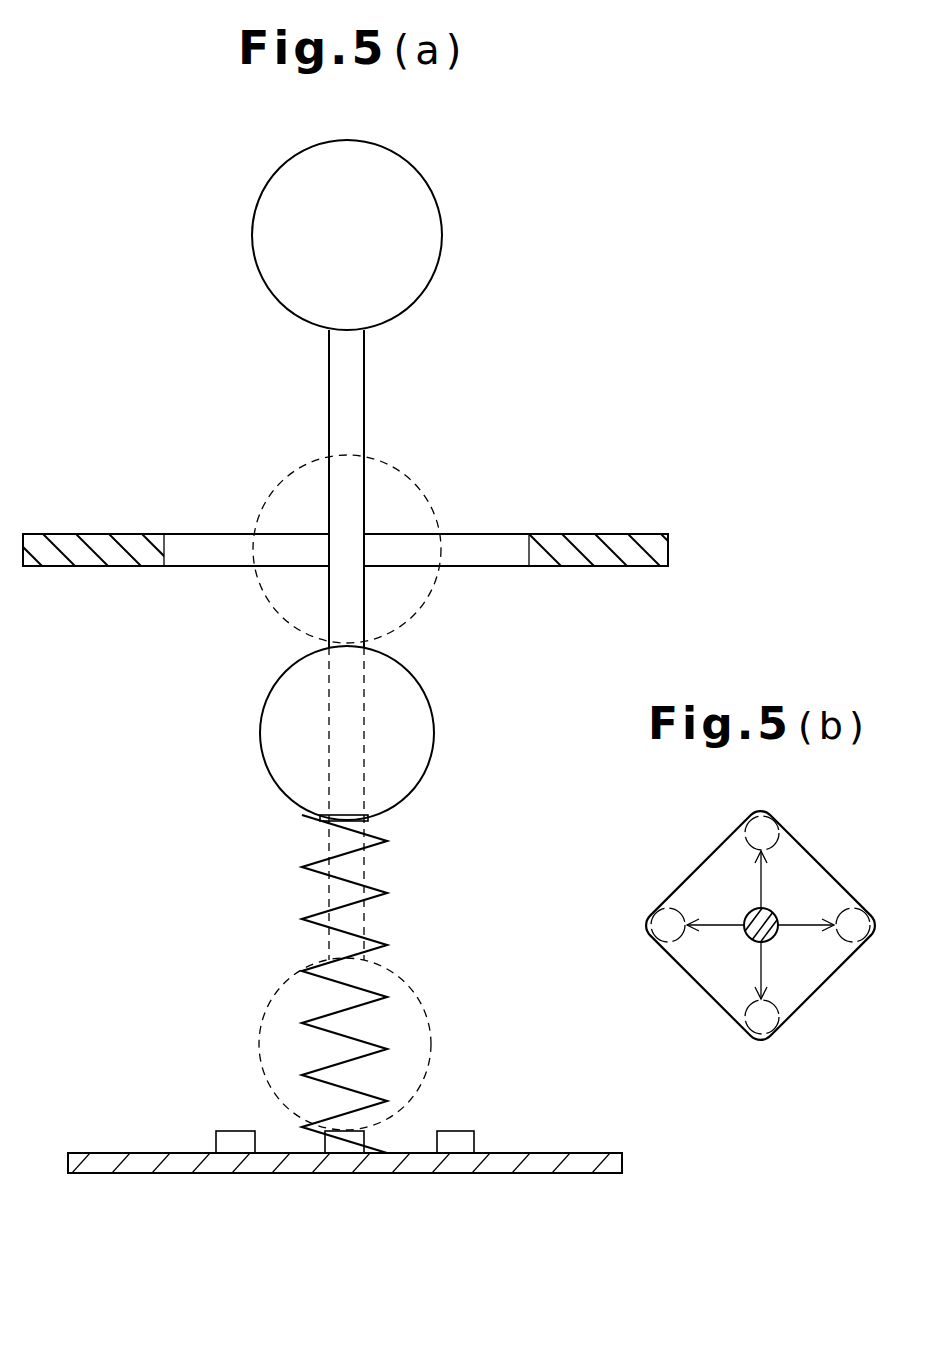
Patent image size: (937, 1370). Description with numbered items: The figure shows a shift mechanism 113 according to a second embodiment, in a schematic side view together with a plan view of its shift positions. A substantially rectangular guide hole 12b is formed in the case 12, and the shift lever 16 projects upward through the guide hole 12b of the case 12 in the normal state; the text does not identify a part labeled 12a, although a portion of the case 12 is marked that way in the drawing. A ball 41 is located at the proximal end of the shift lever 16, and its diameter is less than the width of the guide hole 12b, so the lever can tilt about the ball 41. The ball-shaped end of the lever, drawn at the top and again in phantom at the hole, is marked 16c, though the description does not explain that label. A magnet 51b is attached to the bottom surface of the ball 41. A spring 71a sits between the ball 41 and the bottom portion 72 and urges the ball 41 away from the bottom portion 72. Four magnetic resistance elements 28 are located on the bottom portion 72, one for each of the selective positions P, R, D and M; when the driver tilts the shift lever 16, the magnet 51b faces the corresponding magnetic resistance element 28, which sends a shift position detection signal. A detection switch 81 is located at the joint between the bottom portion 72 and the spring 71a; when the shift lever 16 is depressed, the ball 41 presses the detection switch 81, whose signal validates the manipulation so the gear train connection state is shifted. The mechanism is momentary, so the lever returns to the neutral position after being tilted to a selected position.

In FIG. 5A, the shift mechanism 113 is at (662, 120).
In FIG. 5A, the shift lever 16 is at (364, 382).
In FIG. 5B, the shift lever 16 is at (773, 908).
In FIG. 5A, the ball portion of shift lever 16c is at (433, 237).
In FIG. 5A, the case 12 is at (618, 534).
In FIG. 5A, the guide plate body 12a is at (668, 548).
In FIG. 5A, the guide hole 12b is at (168, 532).
In FIG. 5B, the guide hole 12b is at (835, 973).
In FIG. 5A, the ball 41 is at (388, 662).
In FIG. 5A, the magnet 51b is at (373, 813).
In FIG. 5A, the spring 71a is at (370, 937).
In FIG. 5A, the magnetic resistance elements 28 is at (237, 1131).
In FIG. 5A, the detection switch 81 is at (340, 1148).
In FIG. 5A, the bottom portion 72 is at (577, 1165).